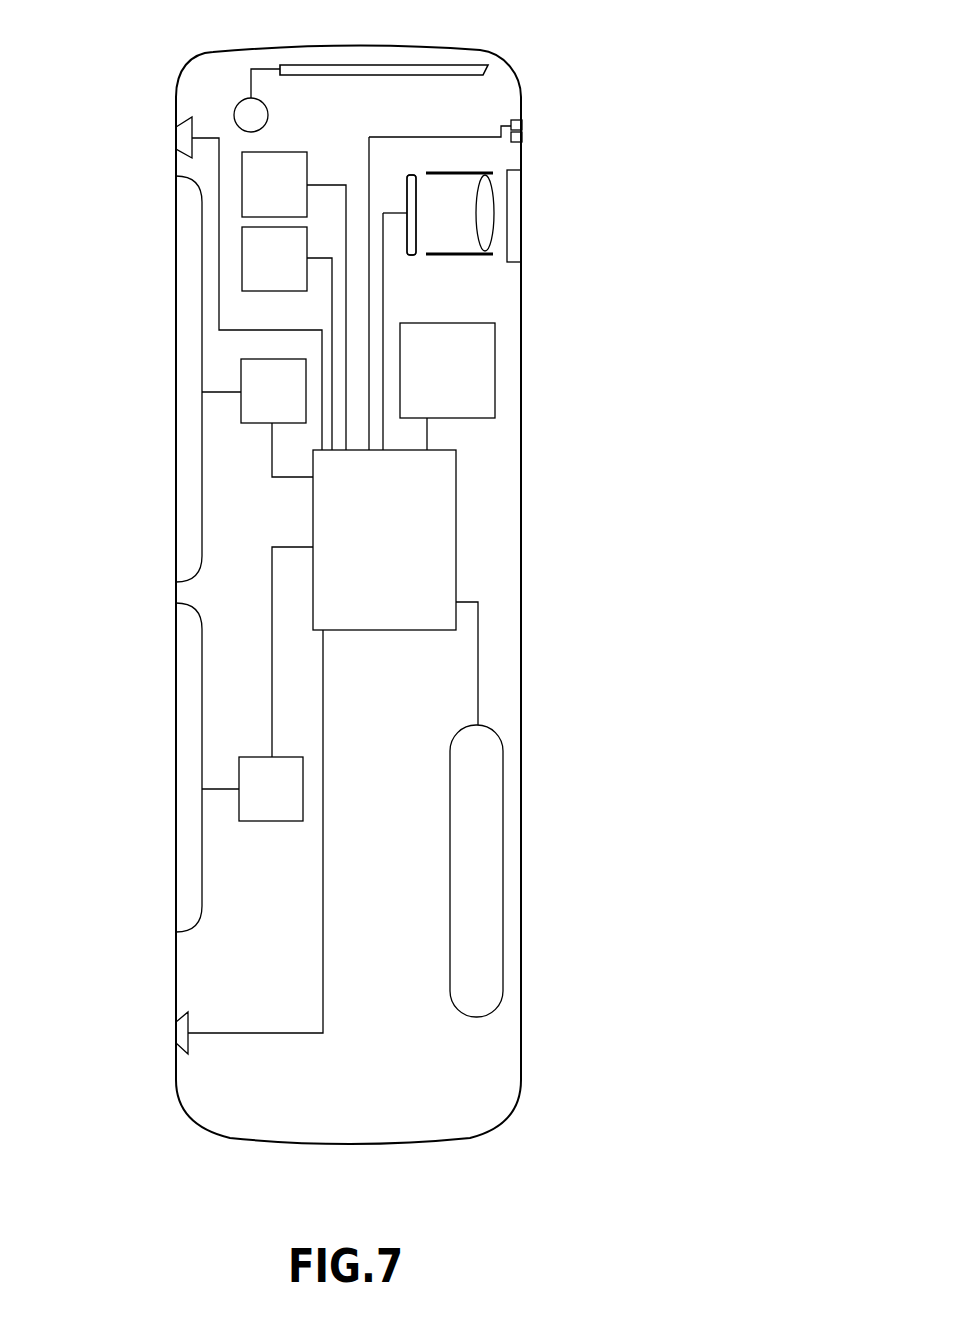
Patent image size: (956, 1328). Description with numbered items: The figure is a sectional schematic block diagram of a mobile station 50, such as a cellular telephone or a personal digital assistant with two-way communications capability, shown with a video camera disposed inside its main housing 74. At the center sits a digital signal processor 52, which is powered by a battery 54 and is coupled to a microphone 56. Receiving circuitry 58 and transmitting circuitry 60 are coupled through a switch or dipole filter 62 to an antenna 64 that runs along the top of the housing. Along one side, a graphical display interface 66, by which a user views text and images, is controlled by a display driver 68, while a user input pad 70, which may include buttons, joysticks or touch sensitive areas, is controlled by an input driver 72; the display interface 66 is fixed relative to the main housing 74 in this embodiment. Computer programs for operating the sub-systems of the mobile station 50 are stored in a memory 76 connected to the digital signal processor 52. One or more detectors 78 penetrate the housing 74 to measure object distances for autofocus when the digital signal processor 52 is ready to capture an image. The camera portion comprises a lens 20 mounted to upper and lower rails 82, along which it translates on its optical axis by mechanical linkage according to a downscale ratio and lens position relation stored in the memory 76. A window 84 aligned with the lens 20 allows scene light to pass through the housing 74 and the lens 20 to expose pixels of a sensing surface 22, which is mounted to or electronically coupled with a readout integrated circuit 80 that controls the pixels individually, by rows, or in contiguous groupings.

The mobile station 50 is at (131, 636).
The digital signal processor 52 is at (456, 558).
The battery 54 is at (503, 850).
The microphone 56 is at (176, 1030).
The receiving circuitry 58 is at (242, 185).
The transmitting circuitry 60 is at (242, 258).
The switch or dipole filter 62 is at (245, 112).
The antenna 64 is at (390, 65).
The graphical display interface 66 is at (188, 315).
The display driver 68 is at (241, 410).
The user input pad 70 is at (177, 838).
The input driver 72 is at (239, 780).
The main housing 74 is at (360, 1145).
The memory 76 is at (495, 363).
The detector 78 is at (522, 125).
The readout integrated circuit 80 is at (413, 190).
The upper and lower rails 82 is at (467, 172).
The window 84 is at (513, 210).
The lens 20 is at (485, 220).
The sensing surface 22 is at (412, 237).